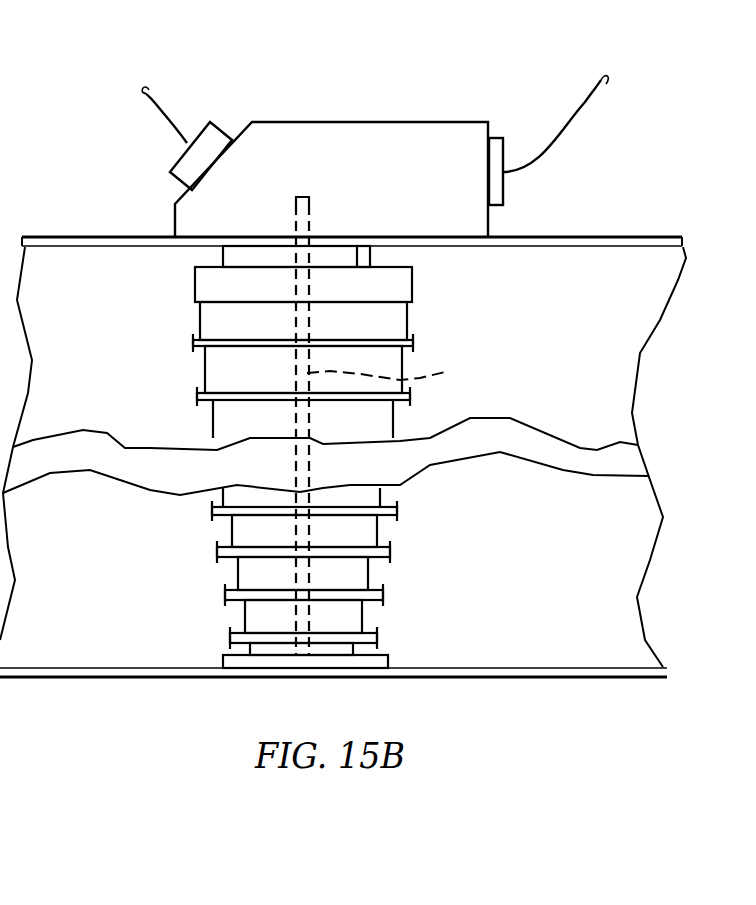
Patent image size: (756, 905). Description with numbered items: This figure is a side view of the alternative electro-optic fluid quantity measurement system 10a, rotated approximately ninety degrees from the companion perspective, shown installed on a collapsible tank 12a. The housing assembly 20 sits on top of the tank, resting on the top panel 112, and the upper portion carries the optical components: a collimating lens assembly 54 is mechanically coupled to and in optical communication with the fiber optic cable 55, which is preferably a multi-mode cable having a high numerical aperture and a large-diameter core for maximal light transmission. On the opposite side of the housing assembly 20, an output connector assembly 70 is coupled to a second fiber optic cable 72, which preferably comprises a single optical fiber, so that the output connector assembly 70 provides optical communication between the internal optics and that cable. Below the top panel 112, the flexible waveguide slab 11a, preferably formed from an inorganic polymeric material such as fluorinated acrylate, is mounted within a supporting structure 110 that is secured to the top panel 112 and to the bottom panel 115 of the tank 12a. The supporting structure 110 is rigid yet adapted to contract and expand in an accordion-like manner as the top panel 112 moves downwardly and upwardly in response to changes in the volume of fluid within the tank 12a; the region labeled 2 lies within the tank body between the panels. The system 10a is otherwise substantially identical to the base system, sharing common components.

The body / structure 2 is at (358, 455).
The electro-optic fluid quantity measurement system 10a is at (334, 136).
The flexible waveguide slab 11a is at (394, 360).
The collapsible tank 12a is at (678, 622).
The housing assembly 20 is at (346, 98).
The collimating lens assembly 54 is at (203, 128).
The fiber optic cable 55 is at (168, 121).
The output connector assembly 70 is at (504, 152).
The fiber optic cable 72 is at (567, 108).
The supporting structure 110 is at (414, 345).
The top panel 112 is at (662, 233).
The bottom panel 115 is at (467, 667).